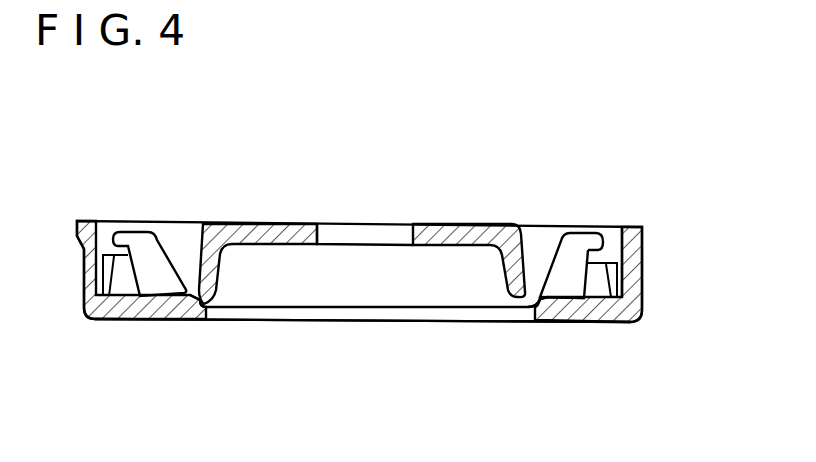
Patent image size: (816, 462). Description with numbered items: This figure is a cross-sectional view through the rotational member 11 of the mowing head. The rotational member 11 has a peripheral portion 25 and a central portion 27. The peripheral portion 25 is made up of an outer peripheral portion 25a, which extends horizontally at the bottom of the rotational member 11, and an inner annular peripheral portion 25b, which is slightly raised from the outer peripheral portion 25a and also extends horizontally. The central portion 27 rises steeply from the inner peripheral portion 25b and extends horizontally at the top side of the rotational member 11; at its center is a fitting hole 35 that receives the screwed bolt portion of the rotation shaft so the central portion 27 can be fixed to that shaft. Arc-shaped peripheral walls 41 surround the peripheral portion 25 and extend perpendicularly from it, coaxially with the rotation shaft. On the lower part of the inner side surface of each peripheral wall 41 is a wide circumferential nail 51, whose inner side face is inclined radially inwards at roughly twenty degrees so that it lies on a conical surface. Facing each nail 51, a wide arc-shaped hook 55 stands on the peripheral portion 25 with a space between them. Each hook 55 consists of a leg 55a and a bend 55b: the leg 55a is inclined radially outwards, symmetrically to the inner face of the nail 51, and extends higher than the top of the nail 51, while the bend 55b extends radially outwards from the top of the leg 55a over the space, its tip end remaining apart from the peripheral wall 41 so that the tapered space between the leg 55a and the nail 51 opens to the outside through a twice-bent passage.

The rotational member 11 is at (636, 222).
The peripheral portion 25 is at (653, 382).
The outer peripheral portion 25a is at (138, 310).
The inner annular peripheral portion 25b is at (195, 306).
The central portion 27 is at (225, 223).
The fitting hole 35 is at (402, 224).
The peripheral wall 41 is at (631, 272).
The nail 51 is at (105, 256).
The hook 55 is at (130, 232).
The leg 55a is at (640, 319).
The bend 55b is at (602, 250).